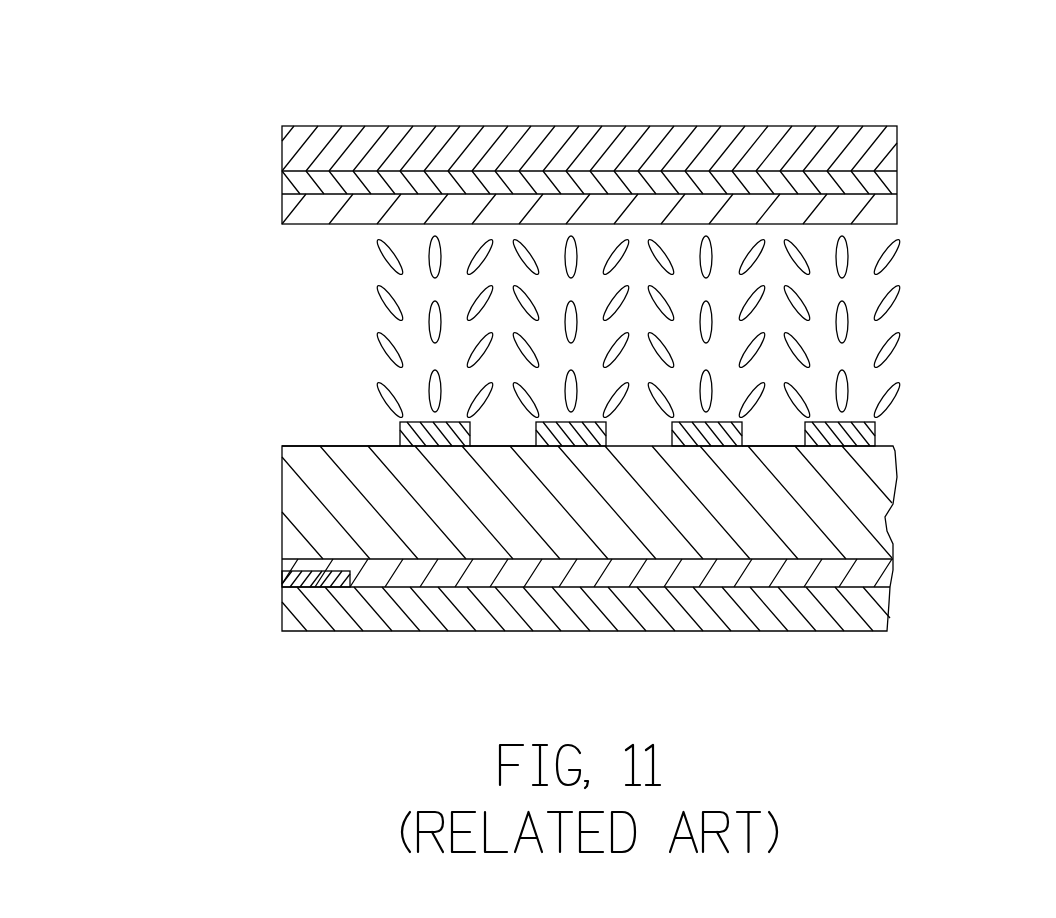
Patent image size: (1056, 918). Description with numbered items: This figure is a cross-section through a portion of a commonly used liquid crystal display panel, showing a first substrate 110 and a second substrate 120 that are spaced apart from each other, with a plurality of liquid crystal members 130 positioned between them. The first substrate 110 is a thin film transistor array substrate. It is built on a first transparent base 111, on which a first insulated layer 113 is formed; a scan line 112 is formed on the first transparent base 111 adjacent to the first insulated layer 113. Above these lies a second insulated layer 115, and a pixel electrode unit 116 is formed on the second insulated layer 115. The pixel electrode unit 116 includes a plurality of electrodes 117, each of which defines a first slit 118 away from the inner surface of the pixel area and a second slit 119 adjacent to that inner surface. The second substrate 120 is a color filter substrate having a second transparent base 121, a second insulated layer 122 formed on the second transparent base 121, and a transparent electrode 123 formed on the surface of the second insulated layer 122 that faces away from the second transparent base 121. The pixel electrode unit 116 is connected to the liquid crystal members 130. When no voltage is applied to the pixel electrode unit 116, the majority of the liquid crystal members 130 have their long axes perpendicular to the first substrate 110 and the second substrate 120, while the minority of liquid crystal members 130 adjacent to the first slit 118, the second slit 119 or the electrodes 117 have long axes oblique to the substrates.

The first substrate 110 is at (590, 492).
The first transparent base 111 is at (880, 603).
The scan line 112 is at (283, 580).
The first insulated layer 113 is at (880, 573).
The second insulated layer 115 is at (890, 537).
The pixel electrode unit 116 is at (893, 413).
The electrode 117 is at (398, 438).
The first slit 118 is at (507, 432).
The second slit 119 is at (307, 435).
The second substrate 120 is at (651, 151).
The second transparent base 121 is at (872, 155).
The second insulated layer 122 is at (880, 183).
The transparent electrode 123 is at (880, 212).
The liquid crystal members 130 is at (900, 298).